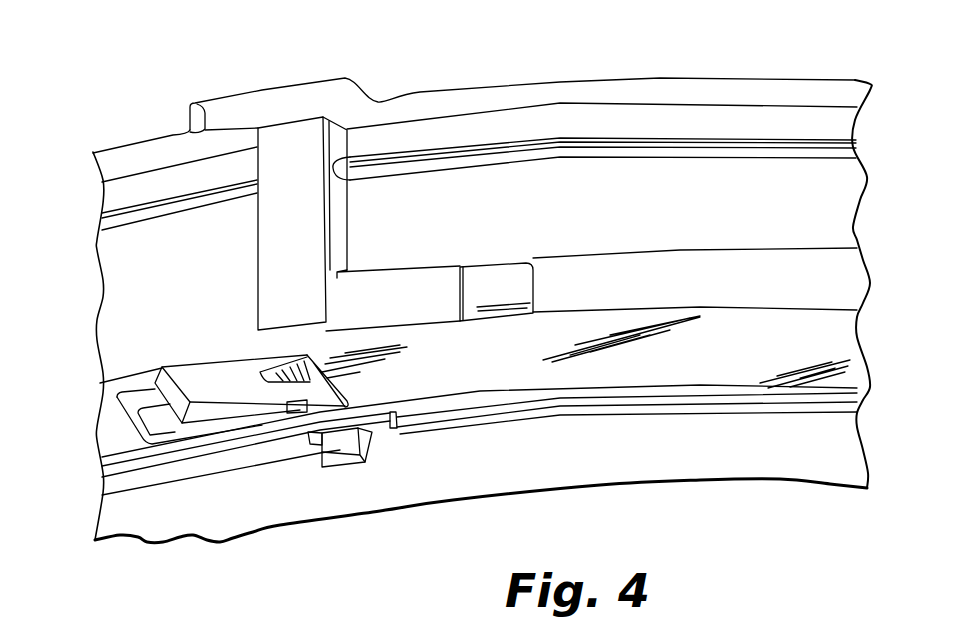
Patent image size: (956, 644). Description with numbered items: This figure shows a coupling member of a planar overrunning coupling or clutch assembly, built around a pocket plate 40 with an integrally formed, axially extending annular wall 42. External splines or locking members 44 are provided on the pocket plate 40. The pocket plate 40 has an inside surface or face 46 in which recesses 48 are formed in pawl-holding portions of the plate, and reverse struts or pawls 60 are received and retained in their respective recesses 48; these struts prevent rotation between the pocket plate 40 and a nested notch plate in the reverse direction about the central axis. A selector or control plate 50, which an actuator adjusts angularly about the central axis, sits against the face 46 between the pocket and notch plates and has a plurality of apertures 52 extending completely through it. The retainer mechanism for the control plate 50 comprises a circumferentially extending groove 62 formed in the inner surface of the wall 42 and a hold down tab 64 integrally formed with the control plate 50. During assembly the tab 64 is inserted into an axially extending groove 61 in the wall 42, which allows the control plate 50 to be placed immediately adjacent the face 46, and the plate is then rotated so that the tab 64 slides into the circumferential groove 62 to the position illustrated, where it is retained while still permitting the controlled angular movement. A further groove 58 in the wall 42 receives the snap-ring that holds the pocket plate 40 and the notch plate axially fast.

The pocket plate 40 is at (459, 502).
The annular wall 42 is at (140, 135).
The external splines 44 is at (264, 89).
The inside surface 46 is at (115, 403).
The recesses 48 is at (100, 466).
The control plate 50 is at (710, 363).
The apertures 52 is at (310, 368).
The groove 58 is at (680, 138).
The reverse struts 60 is at (219, 415).
The axially extending grooves 61 is at (293, 146).
The circumferentially extending groove 62 is at (648, 256).
The hold down tab 64 is at (492, 283).